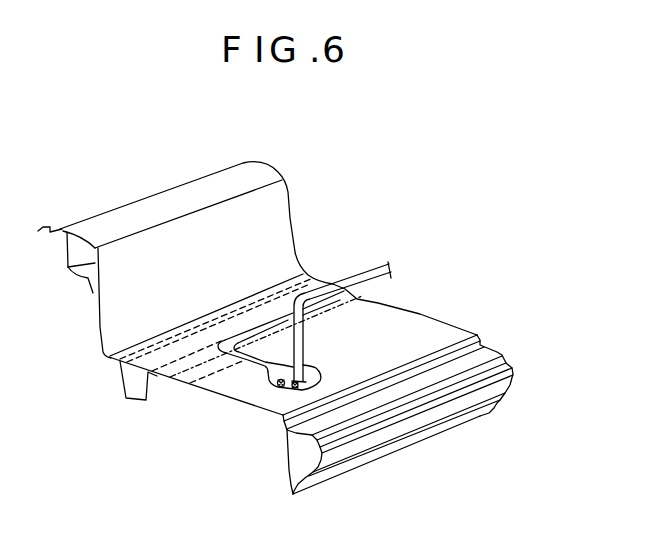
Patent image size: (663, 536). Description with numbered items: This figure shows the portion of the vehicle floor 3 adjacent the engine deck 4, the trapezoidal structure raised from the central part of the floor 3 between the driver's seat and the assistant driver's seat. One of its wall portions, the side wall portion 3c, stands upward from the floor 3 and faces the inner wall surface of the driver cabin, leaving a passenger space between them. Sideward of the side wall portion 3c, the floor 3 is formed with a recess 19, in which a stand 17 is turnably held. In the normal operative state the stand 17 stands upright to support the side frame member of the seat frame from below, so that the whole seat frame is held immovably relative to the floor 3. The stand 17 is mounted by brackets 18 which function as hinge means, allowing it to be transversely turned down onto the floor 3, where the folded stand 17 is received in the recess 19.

The floor 3 is at (208, 393).
The side wall portion 3c is at (289, 239).
The engine deck 4 is at (91, 325).
The stand 17 is at (304, 352).
The brackets 18 is at (283, 396).
The recess 19 is at (254, 364).